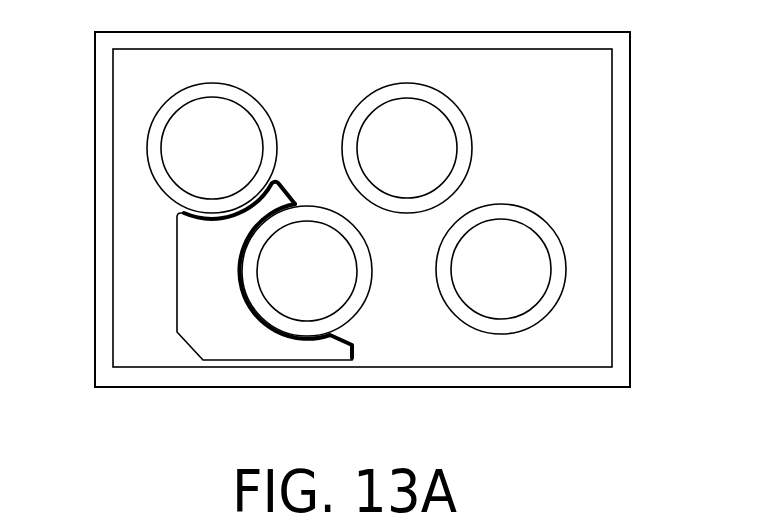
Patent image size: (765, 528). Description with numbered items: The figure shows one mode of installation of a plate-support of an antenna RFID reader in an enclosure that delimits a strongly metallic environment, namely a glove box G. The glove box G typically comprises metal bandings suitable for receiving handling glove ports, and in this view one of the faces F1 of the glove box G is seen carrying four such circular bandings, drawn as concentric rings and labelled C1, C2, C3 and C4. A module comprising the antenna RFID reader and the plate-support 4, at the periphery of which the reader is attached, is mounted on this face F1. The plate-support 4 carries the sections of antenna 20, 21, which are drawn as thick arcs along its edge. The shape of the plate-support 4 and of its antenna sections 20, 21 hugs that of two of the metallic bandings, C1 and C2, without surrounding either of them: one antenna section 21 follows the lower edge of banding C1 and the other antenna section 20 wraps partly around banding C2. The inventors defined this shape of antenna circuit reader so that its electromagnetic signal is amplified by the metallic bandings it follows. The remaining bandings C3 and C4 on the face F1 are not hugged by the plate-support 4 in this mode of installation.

The glove box G is at (632, 343).
The face of the glove box F1 is at (587, 177).
The metallic banding C1 is at (185, 153).
The metallic banding C2 is at (330, 280).
The metal banding C3 is at (505, 298).
The fourth camera C4 is at (437, 147).
The plate-support 4 is at (233, 337).
The section of antenna 20 is at (320, 347).
The section of antenna 21 is at (273, 195).